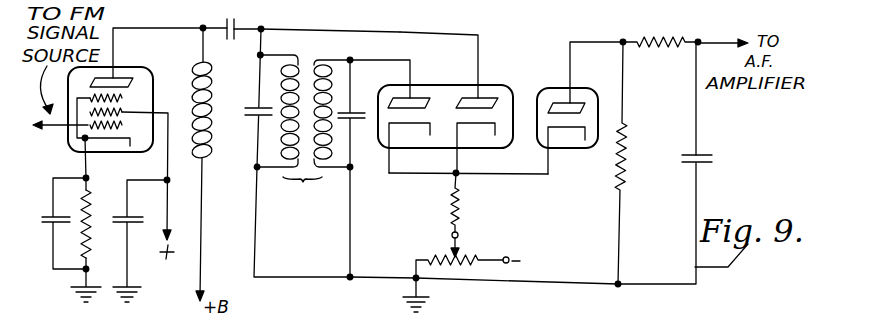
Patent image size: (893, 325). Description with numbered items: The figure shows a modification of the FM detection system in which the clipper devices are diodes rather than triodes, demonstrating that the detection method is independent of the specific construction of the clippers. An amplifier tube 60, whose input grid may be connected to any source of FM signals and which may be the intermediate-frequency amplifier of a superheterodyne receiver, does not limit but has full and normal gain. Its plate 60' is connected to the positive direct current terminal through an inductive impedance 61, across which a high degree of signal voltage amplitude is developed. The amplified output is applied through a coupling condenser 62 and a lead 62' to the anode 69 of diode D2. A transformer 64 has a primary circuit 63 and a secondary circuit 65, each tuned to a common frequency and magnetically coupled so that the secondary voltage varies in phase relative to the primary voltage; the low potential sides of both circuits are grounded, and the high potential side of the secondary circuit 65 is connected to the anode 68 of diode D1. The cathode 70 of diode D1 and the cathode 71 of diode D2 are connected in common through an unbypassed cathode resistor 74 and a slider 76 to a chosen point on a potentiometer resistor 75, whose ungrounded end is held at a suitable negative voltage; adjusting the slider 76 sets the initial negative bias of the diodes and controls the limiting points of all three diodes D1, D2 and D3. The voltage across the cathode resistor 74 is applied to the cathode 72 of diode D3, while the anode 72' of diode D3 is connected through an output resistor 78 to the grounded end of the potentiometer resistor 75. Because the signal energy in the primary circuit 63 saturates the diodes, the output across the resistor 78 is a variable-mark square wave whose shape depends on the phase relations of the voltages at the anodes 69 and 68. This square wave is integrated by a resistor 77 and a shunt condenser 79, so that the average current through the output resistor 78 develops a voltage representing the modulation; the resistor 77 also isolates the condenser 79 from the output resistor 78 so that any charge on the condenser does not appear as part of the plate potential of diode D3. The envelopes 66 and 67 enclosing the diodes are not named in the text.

The amplifier tube 60 is at (110, 92).
The plate of amplifier tube 60' is at (136, 67).
The inductive impedance 61 is at (190, 112).
The coupling condenser 62 is at (262, 20).
The lead 62' is at (436, 51).
The primary circuit 63 is at (272, 143).
The transformer 64 is at (308, 65).
The secondary circuit 65 is at (337, 92).
The double diode tube 66 is at (456, 82).
The diode tube 67 is at (555, 100).
The anode of diode D1 68 is at (400, 98).
The anode of diode D2 69 is at (495, 100).
The cathode of diode D1 70 is at (430, 137).
The cathode of diode D2 71 is at (453, 130).
The cathode of diode D3 72 is at (566, 159).
The anode of diode D3 72' is at (578, 85).
The cathode resistor 74 is at (467, 198).
The potentiometer resistor 75 is at (467, 253).
The slider 76 is at (451, 235).
The resistor 77 is at (653, 33).
The output resistor 78 is at (637, 157).
The shunt condenser 79 is at (738, 145).
The diode D1 is at (394, 121).
The diode D2 is at (475, 116).
The diode D3 is at (578, 124).